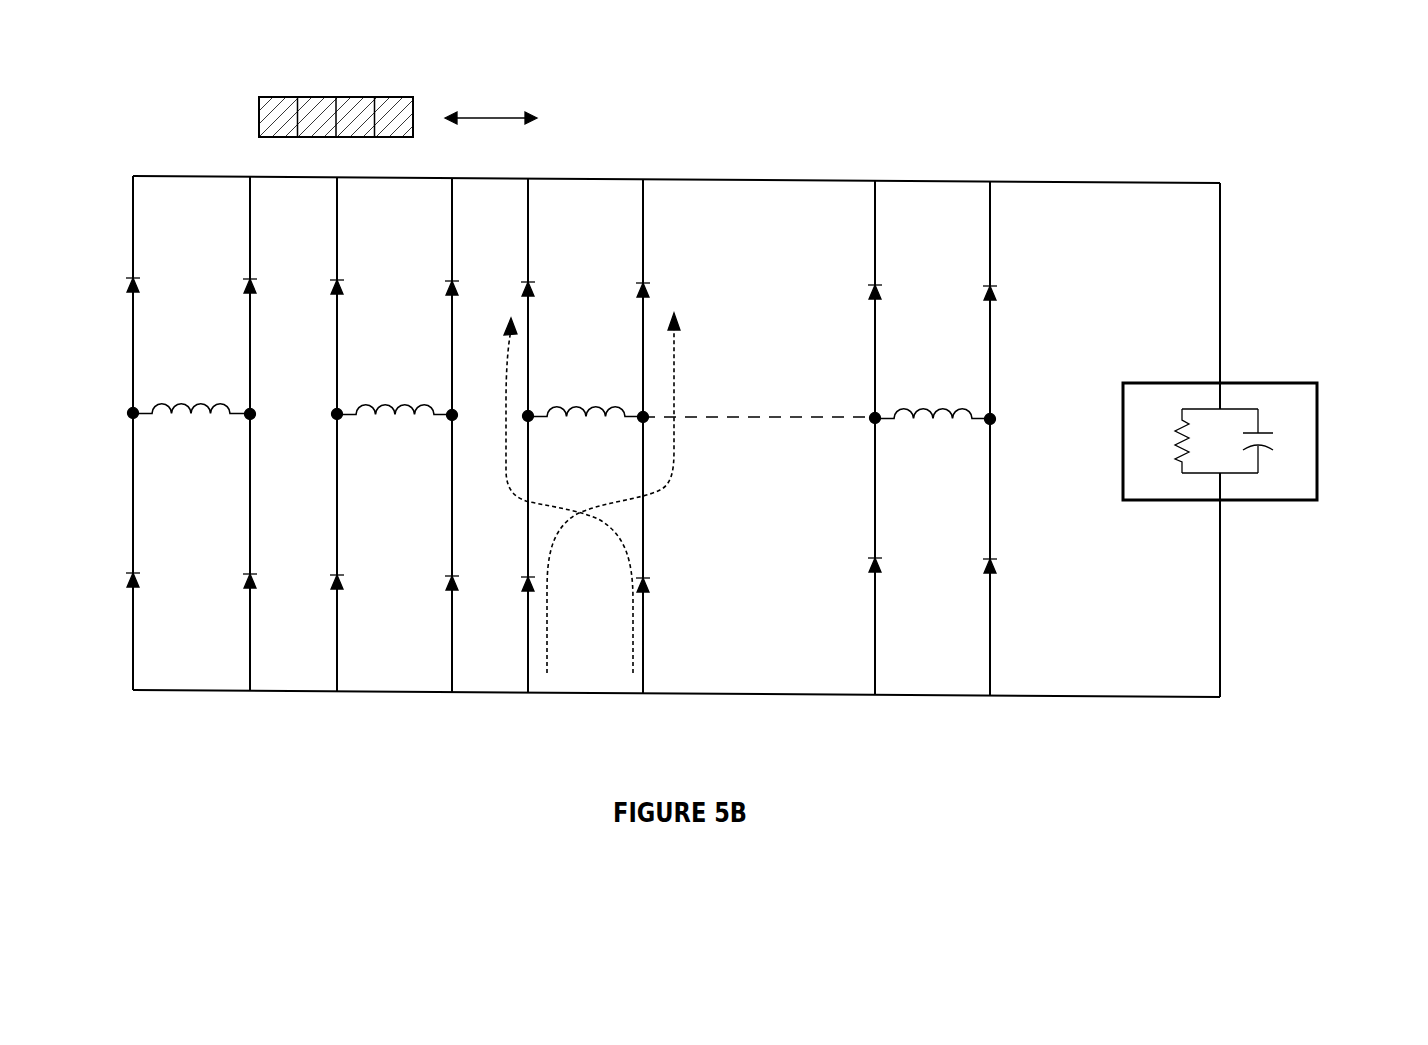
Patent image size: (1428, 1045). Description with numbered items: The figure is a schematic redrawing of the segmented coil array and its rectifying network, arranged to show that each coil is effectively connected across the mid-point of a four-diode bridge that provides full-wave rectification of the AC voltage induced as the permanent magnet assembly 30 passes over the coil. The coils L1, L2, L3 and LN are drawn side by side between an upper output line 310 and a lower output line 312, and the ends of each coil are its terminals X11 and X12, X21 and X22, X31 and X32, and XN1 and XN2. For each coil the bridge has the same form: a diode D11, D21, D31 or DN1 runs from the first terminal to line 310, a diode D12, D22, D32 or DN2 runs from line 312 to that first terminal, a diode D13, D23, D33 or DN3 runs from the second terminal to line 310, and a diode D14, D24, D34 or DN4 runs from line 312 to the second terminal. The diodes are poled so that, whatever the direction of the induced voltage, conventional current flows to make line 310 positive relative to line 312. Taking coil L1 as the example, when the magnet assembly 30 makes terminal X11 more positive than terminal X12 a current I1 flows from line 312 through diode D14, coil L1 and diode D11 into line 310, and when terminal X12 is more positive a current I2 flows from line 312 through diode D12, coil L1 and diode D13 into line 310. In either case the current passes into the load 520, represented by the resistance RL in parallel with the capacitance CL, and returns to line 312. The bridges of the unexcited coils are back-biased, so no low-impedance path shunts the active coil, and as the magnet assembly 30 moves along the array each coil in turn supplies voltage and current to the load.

The PMA 30 is at (283, 97).
The output line 310 is at (1127, 183).
The output line 312 is at (1102, 697).
The load 520 is at (1260, 414).
The diode D11 is at (113, 280).
The diode D12 is at (113, 575).
The diode D13 is at (230, 281).
The diode D14 is at (230, 576).
The diode D21 is at (317, 282).
The diode D22 is at (317, 577).
The diode D23 is at (432, 283).
The diode D24 is at (432, 578).
The diode D31 is at (508, 284).
The diode D32 is at (508, 579).
The diode D33 is at (623, 285).
The diode D34 is at (664, 580).
The diode DN1 is at (854, 287).
The diode DN2 is at (854, 560).
The diode DN3 is at (969, 288).
The diode DN4 is at (969, 561).
The coil L1 is at (191, 392).
The coil L2 is at (394, 393).
The coil L3 is at (585, 395).
The coil LN is at (932, 397).
The terminal X11 is at (137, 418).
The terminal X12 is at (251, 420).
The terminal X21 is at (341, 419).
The terminal X22 is at (453, 421).
The terminal X31 is at (532, 421).
The terminal X32 is at (644, 423).
The terminal XN1 is at (879, 423).
The terminal XN2 is at (991, 425).
The current I1 is at (557, 496).
The current I2 is at (625, 493).
The load resistor RL is at (1168, 441).
The load capacitor CL is at (1245, 441).